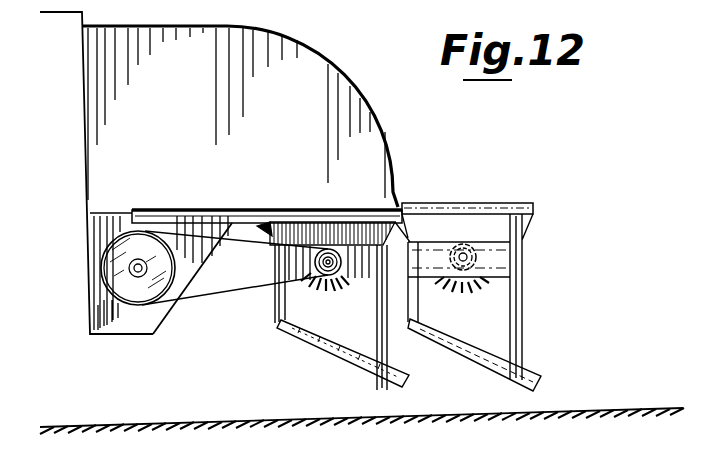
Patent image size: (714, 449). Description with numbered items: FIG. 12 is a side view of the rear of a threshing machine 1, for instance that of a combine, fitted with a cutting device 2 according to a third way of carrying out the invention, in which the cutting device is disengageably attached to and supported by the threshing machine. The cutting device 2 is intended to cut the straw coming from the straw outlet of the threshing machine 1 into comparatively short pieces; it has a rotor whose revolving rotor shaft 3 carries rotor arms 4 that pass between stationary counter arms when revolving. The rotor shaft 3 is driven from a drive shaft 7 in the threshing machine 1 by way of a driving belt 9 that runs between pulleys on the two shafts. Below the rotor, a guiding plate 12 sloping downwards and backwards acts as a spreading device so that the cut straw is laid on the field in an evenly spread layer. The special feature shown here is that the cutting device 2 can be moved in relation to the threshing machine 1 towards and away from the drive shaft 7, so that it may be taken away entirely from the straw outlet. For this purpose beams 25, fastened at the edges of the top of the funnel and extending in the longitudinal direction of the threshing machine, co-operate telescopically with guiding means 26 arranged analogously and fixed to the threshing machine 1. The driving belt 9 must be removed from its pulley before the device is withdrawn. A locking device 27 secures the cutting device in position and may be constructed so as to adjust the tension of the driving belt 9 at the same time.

The threshing machine 1 is at (316, 70).
The cutting device 2 is at (489, 277).
The rotor shaft 3 is at (327, 270).
The rotor arms 4 is at (331, 285).
The drive shaft 7 is at (137, 270).
The driving belt 9 is at (219, 286).
The guiding plate 12 is at (321, 341).
The beams 25 is at (478, 202).
The guiding means 26 is at (224, 211).
The locking device 27 is at (278, 210).